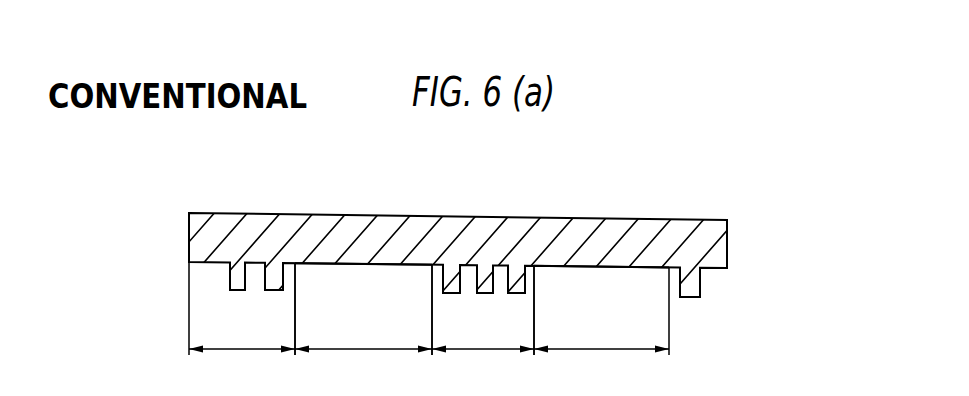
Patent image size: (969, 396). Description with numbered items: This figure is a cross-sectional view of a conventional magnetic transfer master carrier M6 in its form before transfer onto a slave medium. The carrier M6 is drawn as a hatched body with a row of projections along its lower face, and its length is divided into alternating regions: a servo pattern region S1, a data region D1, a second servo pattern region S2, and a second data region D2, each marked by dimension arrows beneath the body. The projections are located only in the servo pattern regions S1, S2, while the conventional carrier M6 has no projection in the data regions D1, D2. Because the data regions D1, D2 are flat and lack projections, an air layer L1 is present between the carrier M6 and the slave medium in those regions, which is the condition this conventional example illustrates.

The conventional magnetic transfer master carrier M6 is at (710, 242).
The air layer L1 is at (367, 276).
The servo pattern region S1 is at (242, 319).
The data region D1 is at (363, 319).
The servo pattern region S2 is at (483, 320).
The data region D2 is at (601, 321).